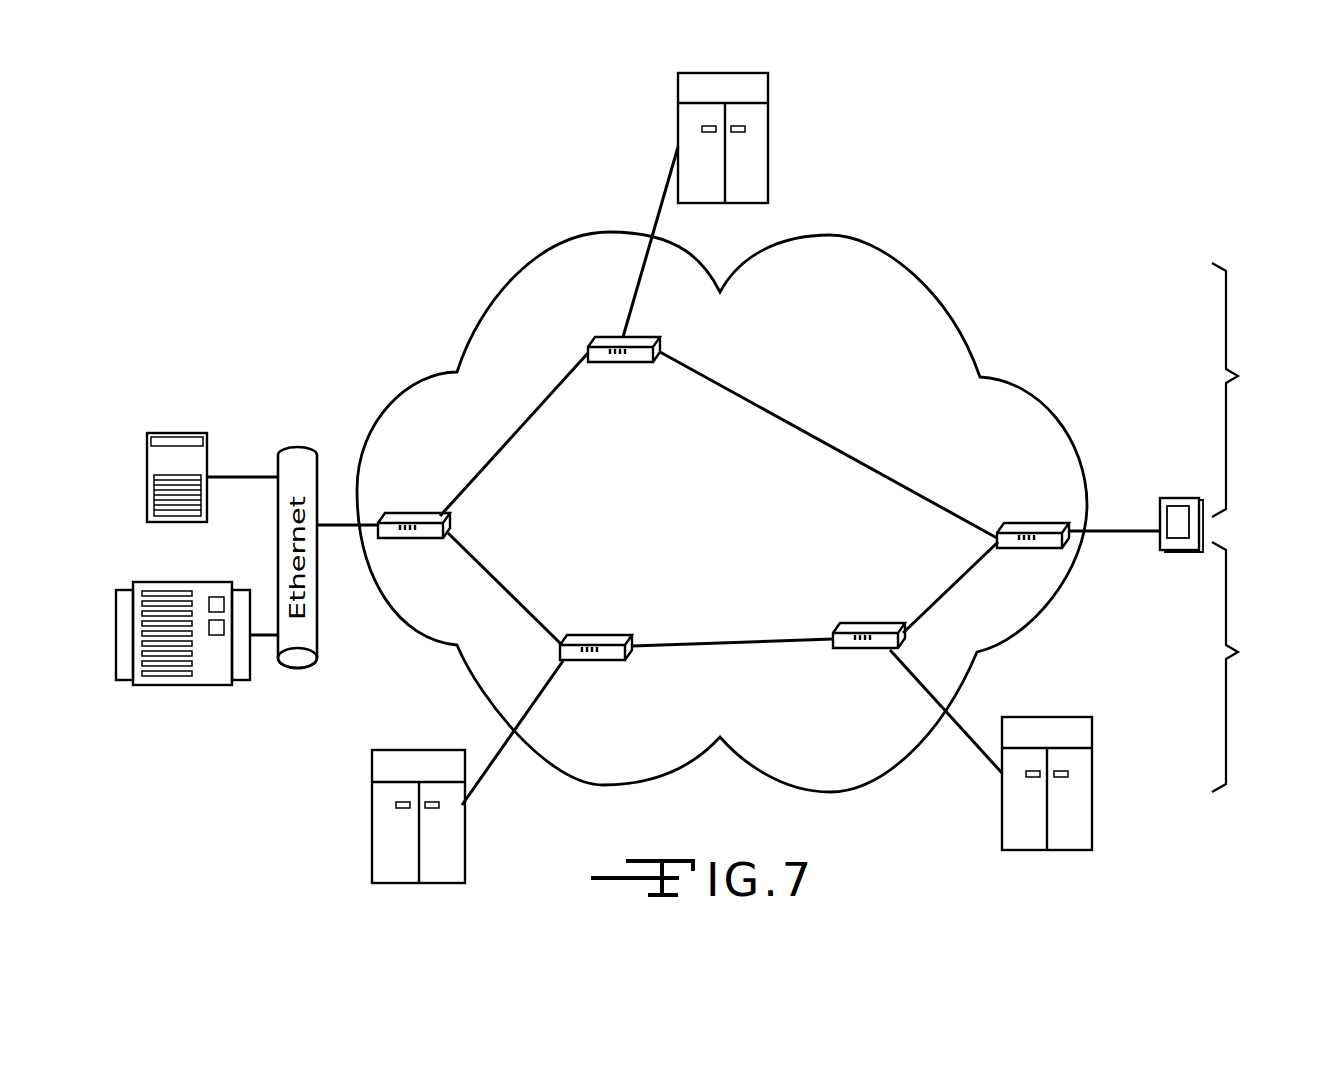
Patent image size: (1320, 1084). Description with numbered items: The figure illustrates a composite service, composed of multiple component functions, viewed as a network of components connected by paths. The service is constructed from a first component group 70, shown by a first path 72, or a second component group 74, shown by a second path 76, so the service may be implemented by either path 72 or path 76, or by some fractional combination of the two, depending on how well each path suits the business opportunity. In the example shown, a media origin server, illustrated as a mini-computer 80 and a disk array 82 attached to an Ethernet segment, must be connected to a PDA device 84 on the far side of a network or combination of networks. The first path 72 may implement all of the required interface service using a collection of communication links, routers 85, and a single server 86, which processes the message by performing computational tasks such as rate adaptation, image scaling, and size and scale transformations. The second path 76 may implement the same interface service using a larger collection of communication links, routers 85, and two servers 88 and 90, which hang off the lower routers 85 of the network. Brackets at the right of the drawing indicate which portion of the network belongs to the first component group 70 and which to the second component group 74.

The first component group 70 is at (1247, 390).
The first path 72 is at (785, 418).
The second component group 74 is at (1247, 667).
The second path 76 is at (707, 648).
The mini-computer 80 is at (177, 433).
The disk array 82 is at (232, 686).
The PDA device 84 is at (1182, 497).
The routers 85 is at (450, 517).
The single server 86 is at (768, 158).
The server 88 is at (465, 838).
The server 90 is at (1092, 786).